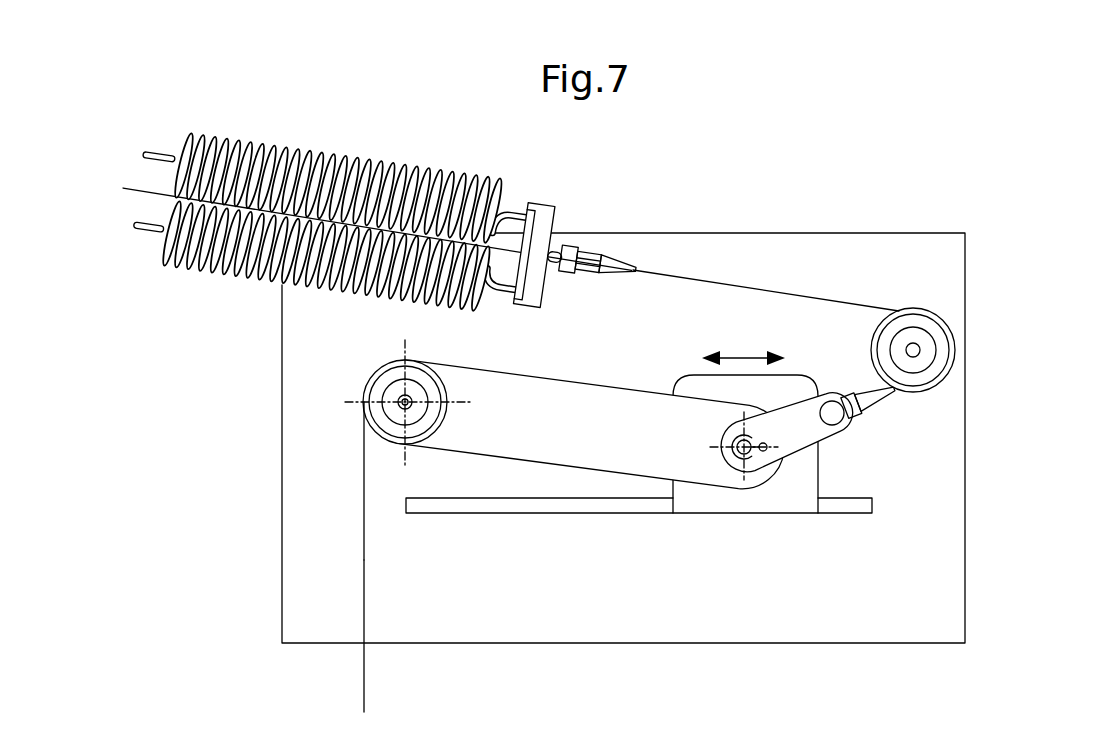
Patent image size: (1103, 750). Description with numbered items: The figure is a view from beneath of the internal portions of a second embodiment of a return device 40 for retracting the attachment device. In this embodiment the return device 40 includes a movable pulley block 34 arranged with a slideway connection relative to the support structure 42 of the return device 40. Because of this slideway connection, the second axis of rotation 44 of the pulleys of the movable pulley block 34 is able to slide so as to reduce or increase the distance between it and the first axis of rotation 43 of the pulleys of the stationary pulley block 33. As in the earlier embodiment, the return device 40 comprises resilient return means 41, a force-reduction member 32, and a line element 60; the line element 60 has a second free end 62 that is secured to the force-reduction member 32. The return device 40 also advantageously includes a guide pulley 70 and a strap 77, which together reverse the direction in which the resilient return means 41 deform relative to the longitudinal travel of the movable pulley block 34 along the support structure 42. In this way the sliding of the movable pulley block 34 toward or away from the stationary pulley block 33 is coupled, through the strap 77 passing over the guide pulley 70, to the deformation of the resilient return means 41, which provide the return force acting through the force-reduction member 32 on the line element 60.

The return device 40 is at (821, 191).
The resilient return means 41 is at (348, 131).
The support structure 42 is at (512, 513).
The first axis of rotation 43 is at (392, 378).
The second axis of rotation 44 is at (751, 460).
The force-reduction member 32 is at (640, 358).
The stationary pulley block 33 is at (341, 422).
The movable pulley block 34 is at (734, 517).
The line element 60 is at (342, 678).
The second free end 62 is at (364, 403).
The guide pulley 70 is at (917, 308).
The strap 77 is at (852, 267).